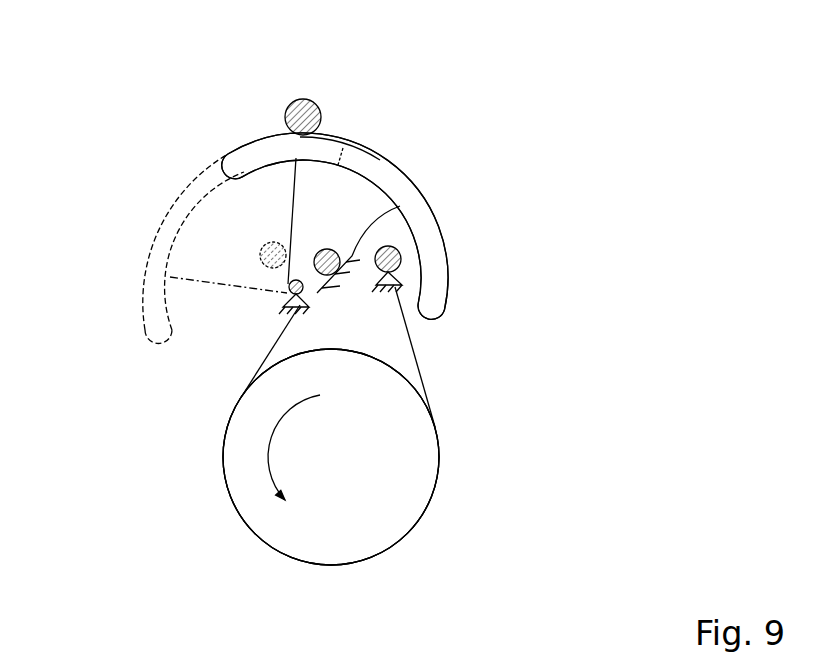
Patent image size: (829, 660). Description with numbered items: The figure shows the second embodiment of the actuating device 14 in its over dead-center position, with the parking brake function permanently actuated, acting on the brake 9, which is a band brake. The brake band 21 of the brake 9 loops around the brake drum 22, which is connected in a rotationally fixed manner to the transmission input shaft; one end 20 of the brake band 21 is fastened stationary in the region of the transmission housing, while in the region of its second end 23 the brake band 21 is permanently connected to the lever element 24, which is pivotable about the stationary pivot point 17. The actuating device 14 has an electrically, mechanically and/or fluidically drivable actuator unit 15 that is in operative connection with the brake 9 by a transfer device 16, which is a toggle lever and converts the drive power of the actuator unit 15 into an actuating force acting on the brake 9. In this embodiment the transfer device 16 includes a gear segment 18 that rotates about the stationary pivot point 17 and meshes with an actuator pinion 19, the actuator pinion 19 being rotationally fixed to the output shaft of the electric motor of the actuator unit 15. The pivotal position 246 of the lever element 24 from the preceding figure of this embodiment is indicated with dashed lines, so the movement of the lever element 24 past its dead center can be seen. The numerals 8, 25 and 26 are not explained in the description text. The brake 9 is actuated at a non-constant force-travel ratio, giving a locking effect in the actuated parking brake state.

The drum 8 is at (224, 552).
The brake 9 is at (395, 567).
The actuating device 14 is at (258, 114).
The actuator unit 15 is at (351, 99).
The transfer device 16 is at (216, 132).
The stationary pivot point 17 is at (310, 298).
The gear segment 18 is at (370, 170).
The actuator pinion 19 is at (313, 99).
The end of the brake band 20 is at (402, 266).
The brake band 21 is at (420, 375).
The brake drum 22 is at (438, 473).
The second end of the brake band 23 is at (268, 244).
The lever element 24 is at (395, 203).
The rod 25 is at (296, 212).
The rotation direction 26 is at (268, 457).
The pivotal position of the lever element 246 is at (232, 283).